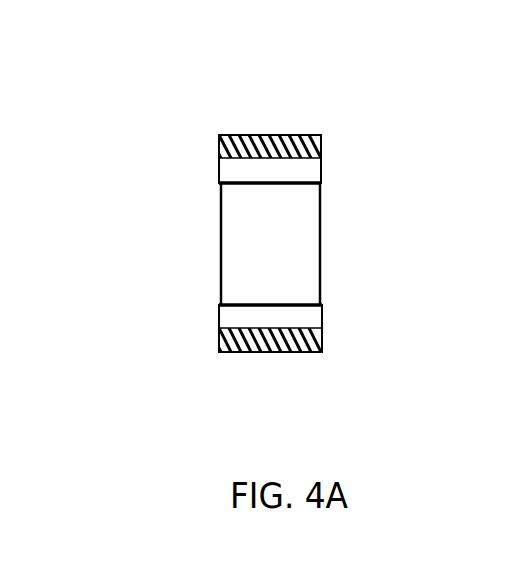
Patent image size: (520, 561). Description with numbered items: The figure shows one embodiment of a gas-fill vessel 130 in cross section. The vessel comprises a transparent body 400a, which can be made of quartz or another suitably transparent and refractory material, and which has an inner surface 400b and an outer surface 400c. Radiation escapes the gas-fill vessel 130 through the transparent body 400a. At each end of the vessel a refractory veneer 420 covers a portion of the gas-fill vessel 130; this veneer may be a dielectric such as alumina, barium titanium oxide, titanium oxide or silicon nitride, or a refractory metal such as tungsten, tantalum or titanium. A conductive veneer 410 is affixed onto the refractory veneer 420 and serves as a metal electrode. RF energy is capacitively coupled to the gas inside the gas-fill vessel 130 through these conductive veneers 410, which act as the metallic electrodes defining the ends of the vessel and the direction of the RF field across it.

The gas-fill vessel 130 is at (175, 214).
The refractory veneer 420 is at (310, 175).
The conductive veneer 410 is at (283, 343).
The transparent body 400a is at (295, 233).
The inner surface 400b is at (225, 220).
The outer surface 400c is at (212, 277).